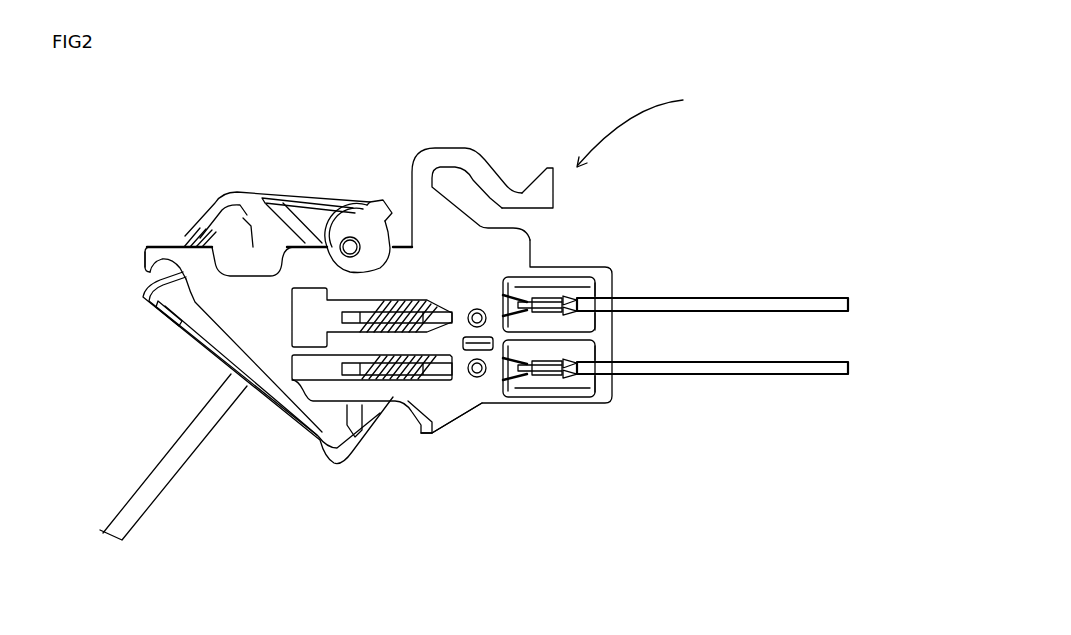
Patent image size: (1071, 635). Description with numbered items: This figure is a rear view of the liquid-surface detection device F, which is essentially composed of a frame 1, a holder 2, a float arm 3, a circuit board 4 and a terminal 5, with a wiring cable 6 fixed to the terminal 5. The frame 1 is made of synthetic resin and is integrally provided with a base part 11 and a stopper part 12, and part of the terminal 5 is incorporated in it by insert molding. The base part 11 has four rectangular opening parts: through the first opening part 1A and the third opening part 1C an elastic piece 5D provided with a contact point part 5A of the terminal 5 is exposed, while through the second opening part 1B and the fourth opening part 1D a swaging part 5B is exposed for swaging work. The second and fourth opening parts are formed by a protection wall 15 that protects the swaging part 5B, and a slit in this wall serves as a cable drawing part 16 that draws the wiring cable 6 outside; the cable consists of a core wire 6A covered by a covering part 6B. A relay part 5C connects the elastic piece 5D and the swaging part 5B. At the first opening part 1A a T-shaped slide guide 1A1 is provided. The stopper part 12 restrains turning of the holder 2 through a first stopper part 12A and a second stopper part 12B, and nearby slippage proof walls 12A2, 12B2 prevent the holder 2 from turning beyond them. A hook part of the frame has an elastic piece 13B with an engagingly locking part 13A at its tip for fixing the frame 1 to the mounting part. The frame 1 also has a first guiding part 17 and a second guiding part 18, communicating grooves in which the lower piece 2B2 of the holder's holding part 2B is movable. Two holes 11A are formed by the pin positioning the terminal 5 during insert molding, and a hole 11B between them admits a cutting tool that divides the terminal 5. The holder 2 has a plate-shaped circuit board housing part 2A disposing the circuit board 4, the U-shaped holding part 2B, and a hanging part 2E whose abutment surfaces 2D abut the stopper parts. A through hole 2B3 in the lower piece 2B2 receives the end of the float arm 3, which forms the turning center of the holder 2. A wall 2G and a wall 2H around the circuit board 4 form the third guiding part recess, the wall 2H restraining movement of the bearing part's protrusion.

The frame 1 is at (478, 405).
The first opening part 1A is at (298, 245).
The slide guide 1A1 is at (314, 240).
The second opening part 1B is at (560, 280).
The third opening part 1C is at (318, 397).
The fourth opening part 1D is at (552, 377).
The holder 2 is at (213, 181).
The circuit board housing part 2A is at (213, 217).
The holding part 2B is at (366, 220).
The lower piece 2B2 is at (355, 220).
The through hole 2B3 is at (352, 238).
The abutment surface 2D is at (163, 280).
The hanging part 2E is at (158, 316).
The wall 2G is at (254, 260).
The wall 2H is at (284, 246).
The float arm 3 is at (157, 475).
The circuit board 4 is at (197, 321).
The terminal 5 is at (540, 292).
The contact point part 5A is at (394, 316).
The swaging part 5B is at (562, 317).
The relay part 5C is at (539, 291).
The elastic piece 5D is at (430, 299).
The wiring cable 6 is at (797, 293).
The core wire 6A is at (552, 294).
The covering part 6B is at (741, 306).
The base part 11 is at (490, 242).
The hole 11A is at (476, 308).
The hole 11B is at (493, 355).
The stopper part 12 is at (130, 270).
The first stopper part 12A is at (158, 275).
The slippage proof wall 12A2 is at (147, 267).
The second stopper part 12B is at (408, 421).
The slippage proof wall 12B2 is at (429, 434).
The engagingly locking part 13A is at (547, 170).
The elastic piece 13B is at (452, 150).
The protection wall 15 is at (592, 270).
The cable drawing part 16 is at (582, 302).
The first guiding part 17 is at (240, 271).
The second guiding part 18 is at (229, 188).
The liquid-surface detection device F is at (635, 121).